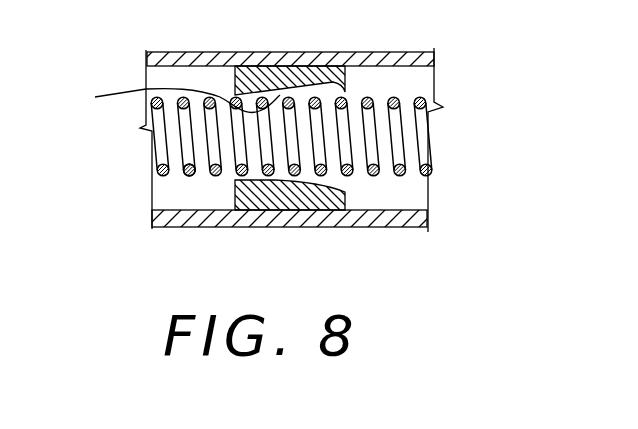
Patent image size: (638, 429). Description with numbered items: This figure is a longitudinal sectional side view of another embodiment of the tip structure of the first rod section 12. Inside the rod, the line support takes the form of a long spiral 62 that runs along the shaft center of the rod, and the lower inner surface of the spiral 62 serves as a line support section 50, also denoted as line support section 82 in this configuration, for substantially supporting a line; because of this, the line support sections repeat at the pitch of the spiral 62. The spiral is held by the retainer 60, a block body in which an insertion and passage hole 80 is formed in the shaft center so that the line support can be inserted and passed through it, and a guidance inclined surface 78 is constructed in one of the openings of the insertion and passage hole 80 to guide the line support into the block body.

The first rod section 12 is at (190, 52).
The guidance inclined surface 78 is at (346, 92).
The insertion and passage hole 80 is at (165, 96).
The spiral 62 is at (158, 150).
The line support section 50 is at (186, 165).
The line support section 82 is at (116, 201).
The retainer 60 is at (346, 202).